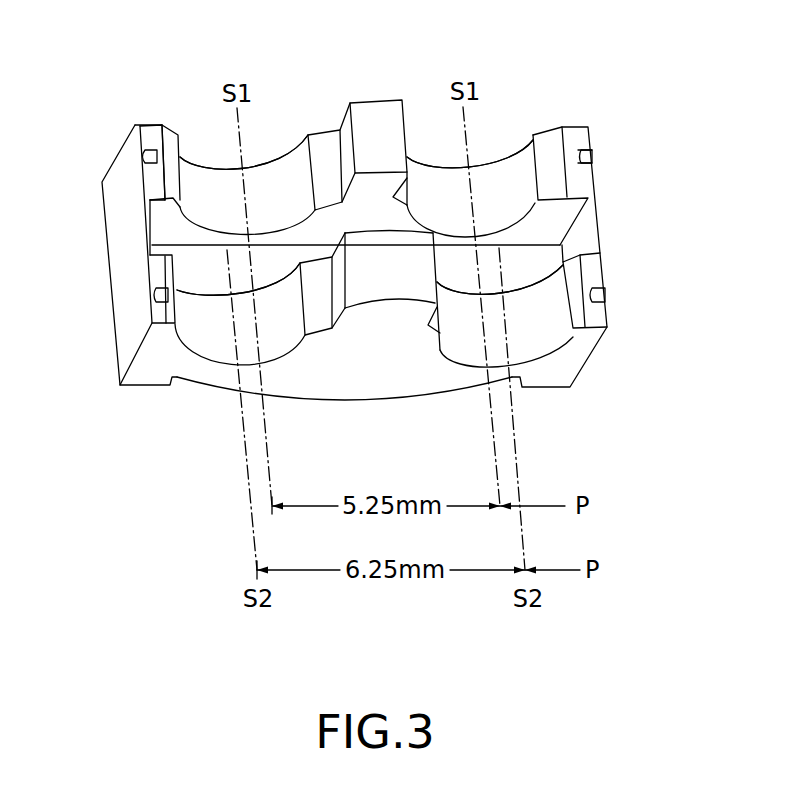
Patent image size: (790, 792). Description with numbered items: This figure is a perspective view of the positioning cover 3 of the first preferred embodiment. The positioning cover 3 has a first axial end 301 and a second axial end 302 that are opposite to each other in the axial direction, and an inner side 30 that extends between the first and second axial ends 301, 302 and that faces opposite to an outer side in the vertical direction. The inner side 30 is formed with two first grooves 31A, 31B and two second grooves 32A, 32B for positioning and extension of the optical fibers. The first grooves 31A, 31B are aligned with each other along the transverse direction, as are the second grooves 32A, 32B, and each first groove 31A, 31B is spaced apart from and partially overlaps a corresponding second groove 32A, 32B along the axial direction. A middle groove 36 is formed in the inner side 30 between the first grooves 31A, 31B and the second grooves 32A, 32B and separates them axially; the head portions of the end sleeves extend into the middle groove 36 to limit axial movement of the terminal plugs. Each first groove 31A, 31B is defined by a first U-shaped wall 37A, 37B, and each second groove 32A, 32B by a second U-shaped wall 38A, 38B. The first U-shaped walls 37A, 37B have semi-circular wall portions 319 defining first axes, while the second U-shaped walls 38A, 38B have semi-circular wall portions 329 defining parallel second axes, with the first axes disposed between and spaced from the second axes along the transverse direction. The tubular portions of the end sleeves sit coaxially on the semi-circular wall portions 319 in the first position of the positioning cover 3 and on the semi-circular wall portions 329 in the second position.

The positioning cover 3 is at (630, 136).
The inner side 30 is at (545, 258).
The first axial end 301 is at (148, 127).
The second axial end 302 is at (145, 388).
The first groove 31A is at (213, 183).
The first U-shaped wall 37A is at (244, 103).
The first groove 31B is at (513, 170).
The first U-shaped wall 37B is at (515, 103).
The semi-circular wall portion 319 is at (436, 153).
The second groove 32A is at (543, 343).
The second U-shaped wall 38A is at (571, 355).
The second groove 32B is at (210, 352).
The second U-shaped wall 38B is at (219, 397).
The semi-circular wall portion 329 is at (470, 357).
The middle groove 36 is at (197, 257).